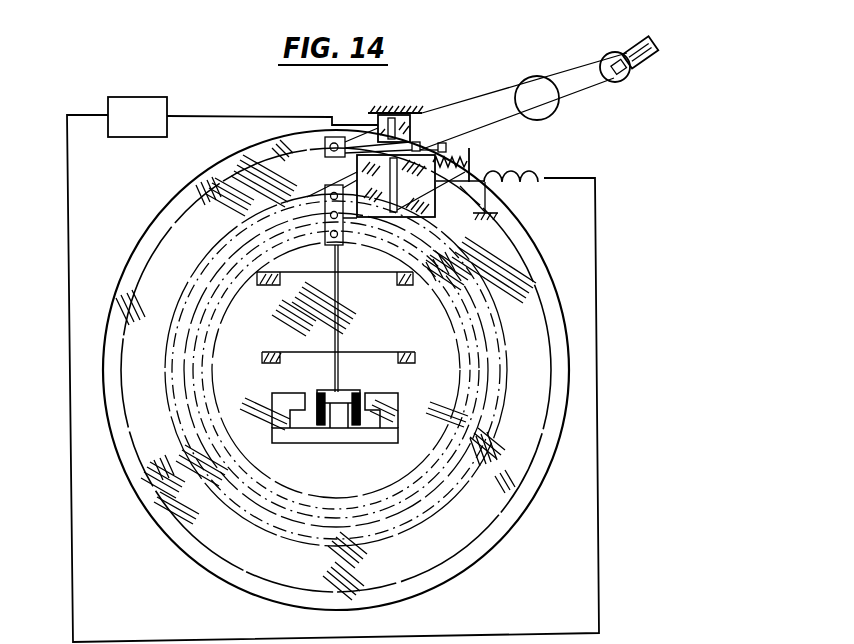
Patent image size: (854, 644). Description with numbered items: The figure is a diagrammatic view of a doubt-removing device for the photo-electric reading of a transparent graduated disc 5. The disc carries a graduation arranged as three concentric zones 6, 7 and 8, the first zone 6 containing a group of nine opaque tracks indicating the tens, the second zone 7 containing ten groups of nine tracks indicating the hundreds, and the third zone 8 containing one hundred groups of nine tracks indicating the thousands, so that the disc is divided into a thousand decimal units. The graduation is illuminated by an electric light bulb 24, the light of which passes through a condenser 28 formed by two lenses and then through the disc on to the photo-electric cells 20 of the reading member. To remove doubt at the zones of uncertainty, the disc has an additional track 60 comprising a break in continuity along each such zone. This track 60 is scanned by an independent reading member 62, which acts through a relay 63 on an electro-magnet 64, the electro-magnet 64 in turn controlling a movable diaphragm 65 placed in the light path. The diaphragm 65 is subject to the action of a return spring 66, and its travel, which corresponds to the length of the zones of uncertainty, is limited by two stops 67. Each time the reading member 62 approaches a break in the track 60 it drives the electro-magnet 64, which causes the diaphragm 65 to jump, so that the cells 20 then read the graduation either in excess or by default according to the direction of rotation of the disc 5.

The transparent graduated disc 5 is at (563, 388).
The first concentric zone 6 is at (325, 497).
The second concentric zone 7 is at (298, 510).
The third concentric zone 8 is at (256, 523).
The photo-electric cells 20 is at (332, 195).
The electric light bulb 24 is at (617, 80).
The condenser 28 is at (530, 84).
The additional track 60 is at (155, 245).
The independent reading member 62 is at (335, 143).
The relay 63 is at (133, 107).
The solenoid coil 64 is at (530, 189).
The movable diaphragm 65 is at (381, 212).
The return spring 66 is at (455, 160).
The stops 67 is at (441, 143).